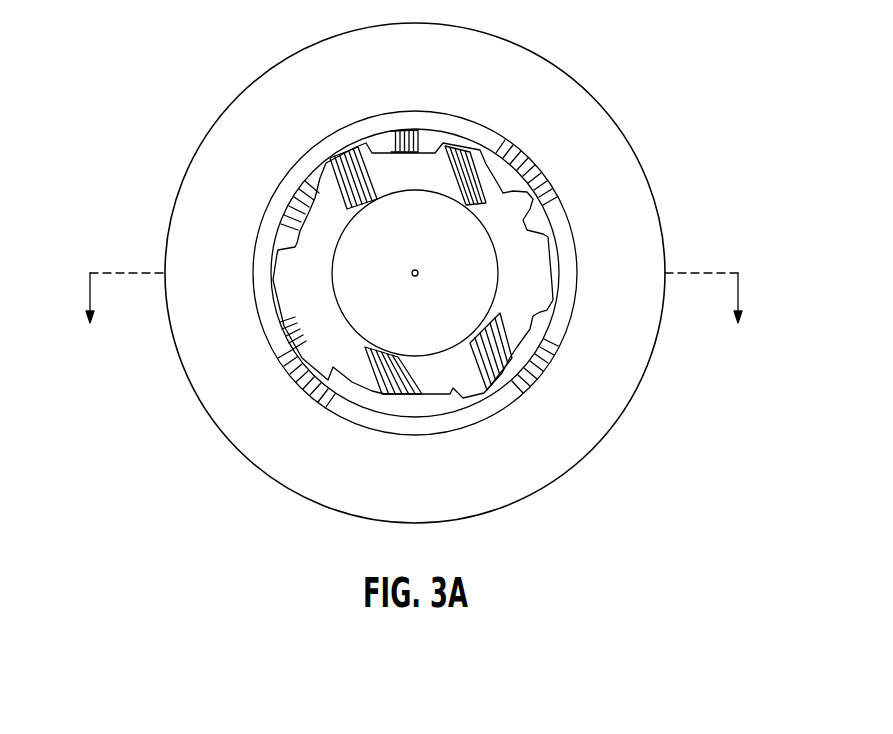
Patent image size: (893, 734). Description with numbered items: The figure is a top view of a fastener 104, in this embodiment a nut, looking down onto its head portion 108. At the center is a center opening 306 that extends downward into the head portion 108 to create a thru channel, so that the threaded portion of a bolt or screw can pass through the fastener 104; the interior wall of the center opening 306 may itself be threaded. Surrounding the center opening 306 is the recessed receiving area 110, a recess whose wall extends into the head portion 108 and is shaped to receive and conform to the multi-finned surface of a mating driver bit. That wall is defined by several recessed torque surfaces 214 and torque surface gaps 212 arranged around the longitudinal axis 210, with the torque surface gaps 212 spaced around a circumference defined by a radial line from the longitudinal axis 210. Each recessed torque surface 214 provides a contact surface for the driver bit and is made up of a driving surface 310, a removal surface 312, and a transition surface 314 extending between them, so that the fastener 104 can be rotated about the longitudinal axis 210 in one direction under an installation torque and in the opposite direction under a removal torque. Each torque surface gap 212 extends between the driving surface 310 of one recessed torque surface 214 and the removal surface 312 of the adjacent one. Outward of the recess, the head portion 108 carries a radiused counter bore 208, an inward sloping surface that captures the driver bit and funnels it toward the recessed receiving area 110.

The fastener 104 is at (140, 35).
The head portion 108 is at (558, 83).
The radiused counter bore 208 is at (253, 267).
The recessed torque surface 214 is at (353, 167).
The longitudinal axis 210 is at (413, 271).
The center opening 306 is at (455, 237).
The removal surface 312 is at (543, 250).
The recessed receiving area 110 is at (320, 313).
The torque surface gap 212 is at (330, 377).
The driving surface 310 is at (533, 323).
The transition surface 314 is at (487, 387).